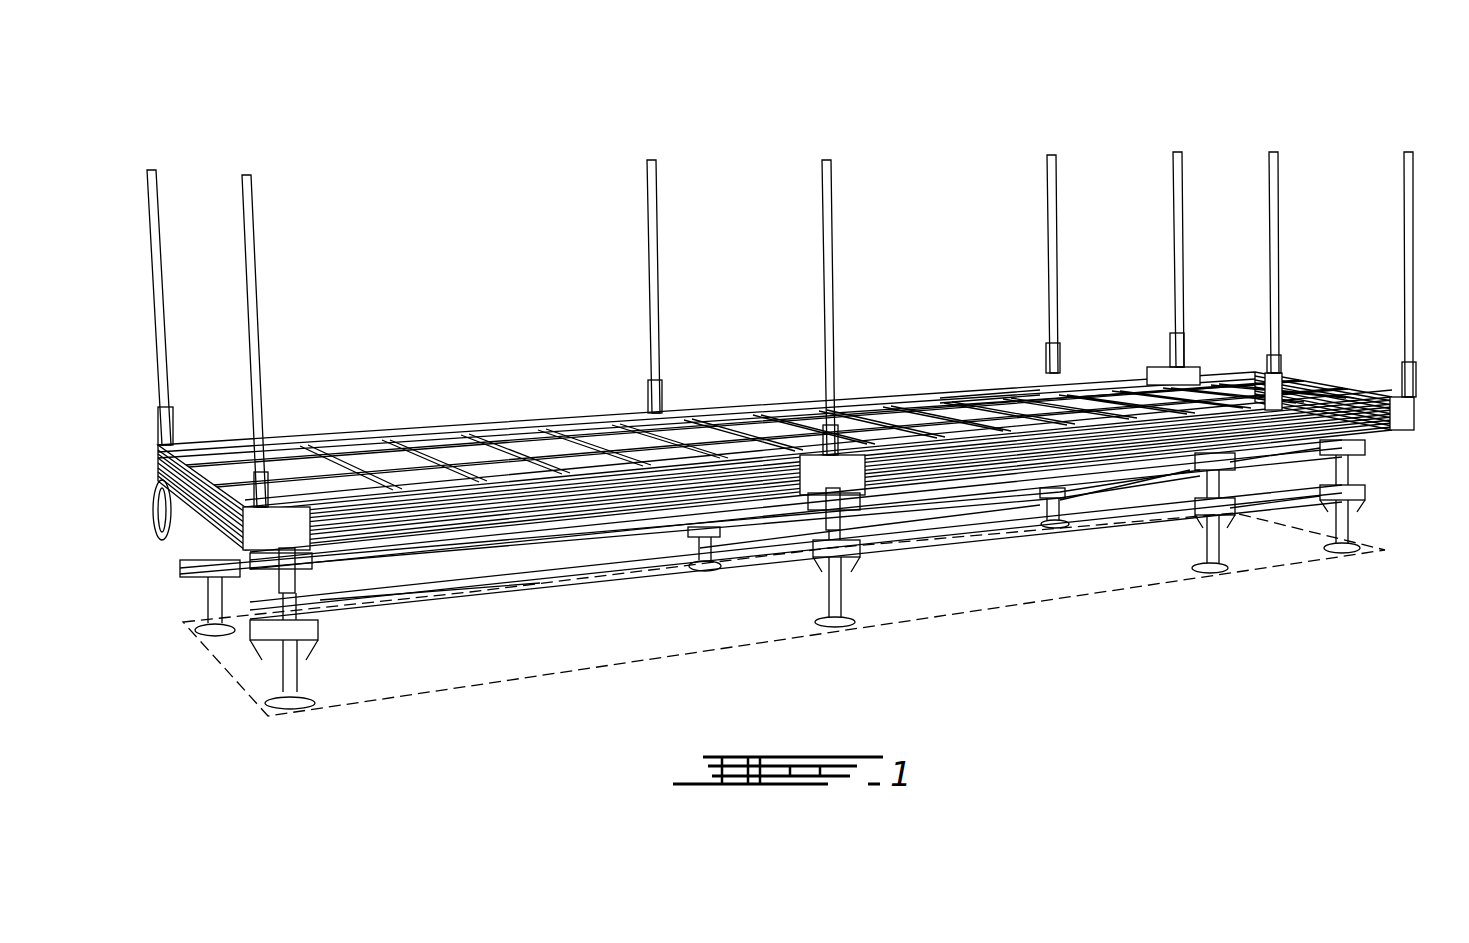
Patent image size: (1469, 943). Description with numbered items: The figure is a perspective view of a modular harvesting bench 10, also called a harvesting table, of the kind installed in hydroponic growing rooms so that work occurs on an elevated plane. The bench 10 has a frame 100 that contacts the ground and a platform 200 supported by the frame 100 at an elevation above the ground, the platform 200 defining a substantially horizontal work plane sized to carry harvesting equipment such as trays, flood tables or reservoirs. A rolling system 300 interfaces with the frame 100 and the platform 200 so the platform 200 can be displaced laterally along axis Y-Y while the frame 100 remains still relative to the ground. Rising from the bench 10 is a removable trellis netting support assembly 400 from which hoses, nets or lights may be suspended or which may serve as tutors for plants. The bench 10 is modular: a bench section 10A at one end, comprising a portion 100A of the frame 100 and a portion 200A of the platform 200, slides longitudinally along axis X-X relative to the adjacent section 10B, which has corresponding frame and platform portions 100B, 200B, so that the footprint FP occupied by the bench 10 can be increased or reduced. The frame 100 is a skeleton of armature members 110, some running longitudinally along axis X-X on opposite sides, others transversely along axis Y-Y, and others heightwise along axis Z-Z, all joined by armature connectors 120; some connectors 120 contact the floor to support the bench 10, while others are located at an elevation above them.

The harvesting bench 10 is at (218, 183).
The bench section 10A is at (1370, 557).
The adjacent section 10B is at (1222, 580).
The frame 100 is at (222, 632).
The portion of the frame 100A is at (1372, 532).
The leg assembly of second module 100B is at (1061, 546).
The armature members 110 is at (767, 537).
The armature connectors 120 is at (822, 560).
The platform 200 is at (190, 444).
The portion of the platform 200A is at (1160, 355).
The deck frame section B 200B is at (996, 392).
The rolling system 300 is at (143, 485).
The trellis netting support assembly 400 is at (144, 276).
The footprint FP is at (403, 693).
The axis X-X is at (1425, 383).
The axis Y-Y is at (390, 438).
The axis Z-Z is at (1420, 440).